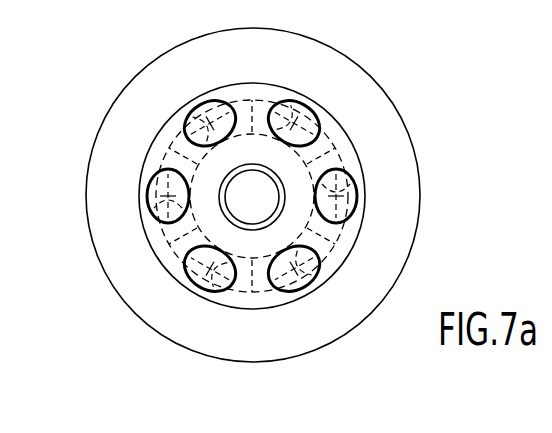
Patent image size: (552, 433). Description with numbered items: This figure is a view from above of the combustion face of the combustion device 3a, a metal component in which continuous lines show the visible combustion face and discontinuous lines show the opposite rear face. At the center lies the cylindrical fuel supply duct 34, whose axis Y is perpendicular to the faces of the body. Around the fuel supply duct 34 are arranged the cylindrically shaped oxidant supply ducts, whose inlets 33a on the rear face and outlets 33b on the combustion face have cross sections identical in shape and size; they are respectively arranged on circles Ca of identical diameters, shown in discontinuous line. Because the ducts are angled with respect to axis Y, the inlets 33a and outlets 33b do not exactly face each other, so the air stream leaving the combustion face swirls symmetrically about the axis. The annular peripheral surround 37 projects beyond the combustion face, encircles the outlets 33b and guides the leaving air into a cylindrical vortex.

The combustion device 3a is at (110, 366).
The inlets 33a is at (347, 235).
The outlets 33b is at (316, 280).
The fuel supply duct 34 is at (233, 203).
The peripheral surround 37 is at (312, 95).
The circles Ca is at (330, 140).